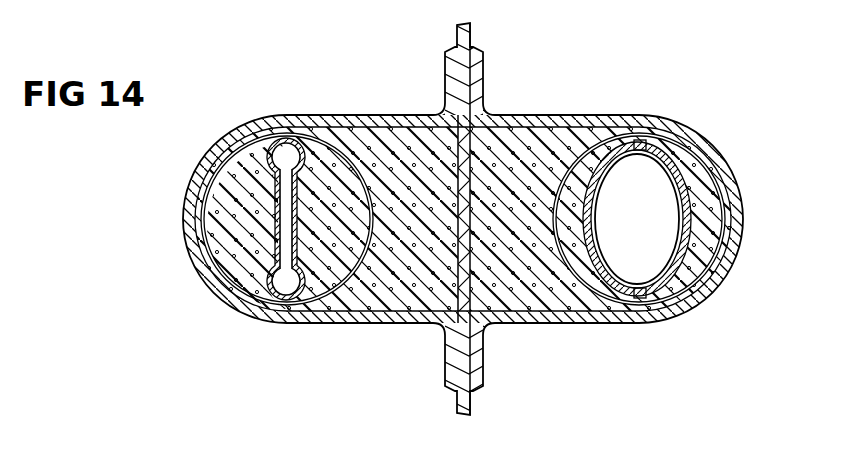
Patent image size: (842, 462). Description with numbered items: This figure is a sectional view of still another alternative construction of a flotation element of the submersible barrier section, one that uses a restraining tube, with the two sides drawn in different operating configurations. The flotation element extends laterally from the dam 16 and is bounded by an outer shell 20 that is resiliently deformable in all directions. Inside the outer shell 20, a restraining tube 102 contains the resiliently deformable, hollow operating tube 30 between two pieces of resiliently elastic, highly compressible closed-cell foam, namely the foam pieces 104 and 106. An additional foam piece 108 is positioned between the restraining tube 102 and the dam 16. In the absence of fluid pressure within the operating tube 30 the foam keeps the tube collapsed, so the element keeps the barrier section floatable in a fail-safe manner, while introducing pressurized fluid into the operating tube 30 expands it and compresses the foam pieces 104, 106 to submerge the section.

The dam 16 is at (463, 43).
The outer shell 20 is at (214, 158).
The operating tube 30 is at (297, 132).
The restraining tube 102 is at (262, 140).
The foam piece 104 is at (245, 225).
The foam piece 106 is at (578, 293).
The additional foam piece 108 is at (438, 225).